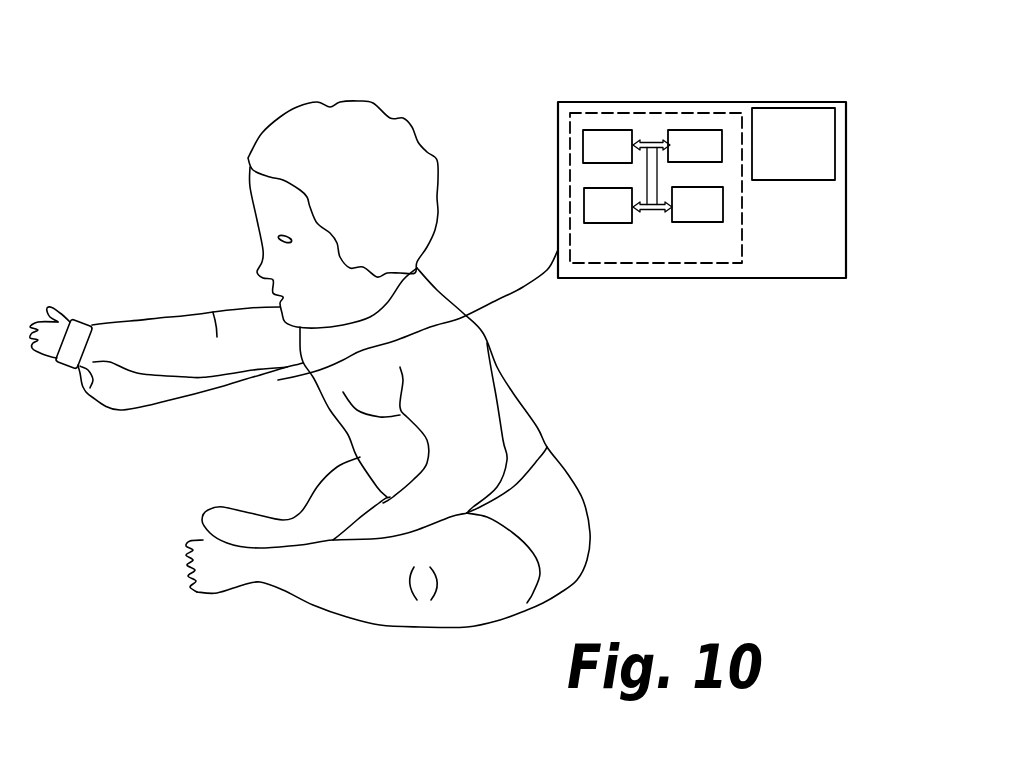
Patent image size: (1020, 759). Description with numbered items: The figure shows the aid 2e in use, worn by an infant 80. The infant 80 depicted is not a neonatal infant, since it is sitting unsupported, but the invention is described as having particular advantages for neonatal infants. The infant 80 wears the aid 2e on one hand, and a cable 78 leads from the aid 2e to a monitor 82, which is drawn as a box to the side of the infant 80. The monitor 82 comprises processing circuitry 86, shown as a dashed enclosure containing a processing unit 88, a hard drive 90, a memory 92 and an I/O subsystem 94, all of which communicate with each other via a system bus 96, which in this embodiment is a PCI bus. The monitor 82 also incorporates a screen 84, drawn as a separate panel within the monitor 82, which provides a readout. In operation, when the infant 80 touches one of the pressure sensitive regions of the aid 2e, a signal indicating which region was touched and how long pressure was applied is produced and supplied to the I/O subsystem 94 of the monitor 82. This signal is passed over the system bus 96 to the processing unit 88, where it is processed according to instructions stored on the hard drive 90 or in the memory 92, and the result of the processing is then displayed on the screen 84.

The aid 2e is at (80, 322).
The cable 78 is at (197, 397).
The infant 80 is at (674, 194).
The monitor 82 is at (829, 247).
The screen 84 is at (806, 160).
The processing circuitry 86 is at (720, 263).
The processing unit 88 is at (621, 160).
The hard drive 90 is at (702, 160).
The memory 92 is at (621, 220).
The I/O subsystem 94 is at (709, 220).
The system bus 96 is at (653, 212).